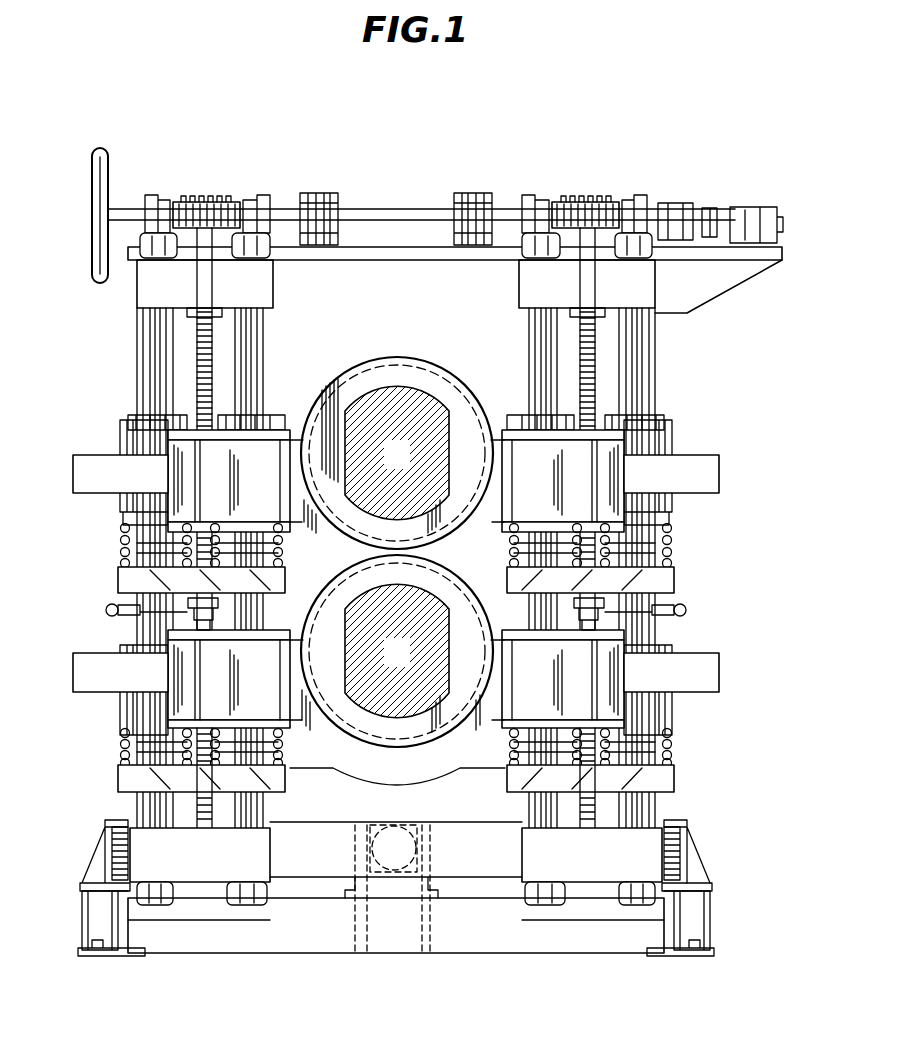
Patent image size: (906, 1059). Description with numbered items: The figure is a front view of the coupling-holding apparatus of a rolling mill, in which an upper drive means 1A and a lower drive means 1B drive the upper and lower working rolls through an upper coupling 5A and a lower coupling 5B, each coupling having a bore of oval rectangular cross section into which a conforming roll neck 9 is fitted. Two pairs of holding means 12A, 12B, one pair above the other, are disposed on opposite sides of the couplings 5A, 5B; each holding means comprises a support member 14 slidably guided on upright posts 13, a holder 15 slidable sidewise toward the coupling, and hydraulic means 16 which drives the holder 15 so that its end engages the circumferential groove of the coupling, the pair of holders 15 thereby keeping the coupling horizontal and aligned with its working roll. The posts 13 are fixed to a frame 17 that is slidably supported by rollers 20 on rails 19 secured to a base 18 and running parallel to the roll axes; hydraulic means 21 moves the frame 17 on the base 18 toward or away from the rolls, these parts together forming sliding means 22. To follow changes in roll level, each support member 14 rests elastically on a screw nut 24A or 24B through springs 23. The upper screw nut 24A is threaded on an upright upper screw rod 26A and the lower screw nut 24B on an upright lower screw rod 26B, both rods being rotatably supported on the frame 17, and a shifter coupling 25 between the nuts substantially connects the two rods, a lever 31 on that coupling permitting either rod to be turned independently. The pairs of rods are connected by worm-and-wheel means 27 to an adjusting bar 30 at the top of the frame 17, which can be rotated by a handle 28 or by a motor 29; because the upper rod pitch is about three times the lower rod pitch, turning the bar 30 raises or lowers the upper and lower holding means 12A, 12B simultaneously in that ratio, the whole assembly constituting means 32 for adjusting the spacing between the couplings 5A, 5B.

The upper drive means 1A is at (377, 351).
The lower drive means 1B is at (361, 753).
The upper coupling 5A is at (431, 366).
The lower coupling 5B is at (430, 742).
The roll neck 9 is at (405, 466).
The upper holding means 12A is at (290, 425).
The lower holding means 12B is at (291, 623).
The upright posts 13 is at (150, 339).
The support member 14 is at (130, 437).
The holder 15 is at (306, 498).
The hydraulic means 16 is at (80, 477).
The frame 17 is at (453, 878).
The base 18 is at (86, 918).
The rails 19 is at (104, 844).
The rollers 20 is at (117, 857).
The hydraulic means 21 is at (366, 858).
The sliding means 22 is at (704, 885).
The springs 23 is at (121, 548).
The upper screw nut 24A is at (118, 583).
The lower screw nut 24B is at (118, 790).
The shifter coupling 25 is at (214, 614).
The upper screw rod 26A is at (204, 320).
The lower screw rod 26B is at (208, 812).
The worm-and-wheel means 27 is at (213, 202).
The handle 28 is at (92, 216).
The motor 29 is at (752, 207).
The adjusting bar 30 is at (408, 208).
The lever 31 is at (106, 612).
The means for adjusting spacing 32 is at (653, 199).